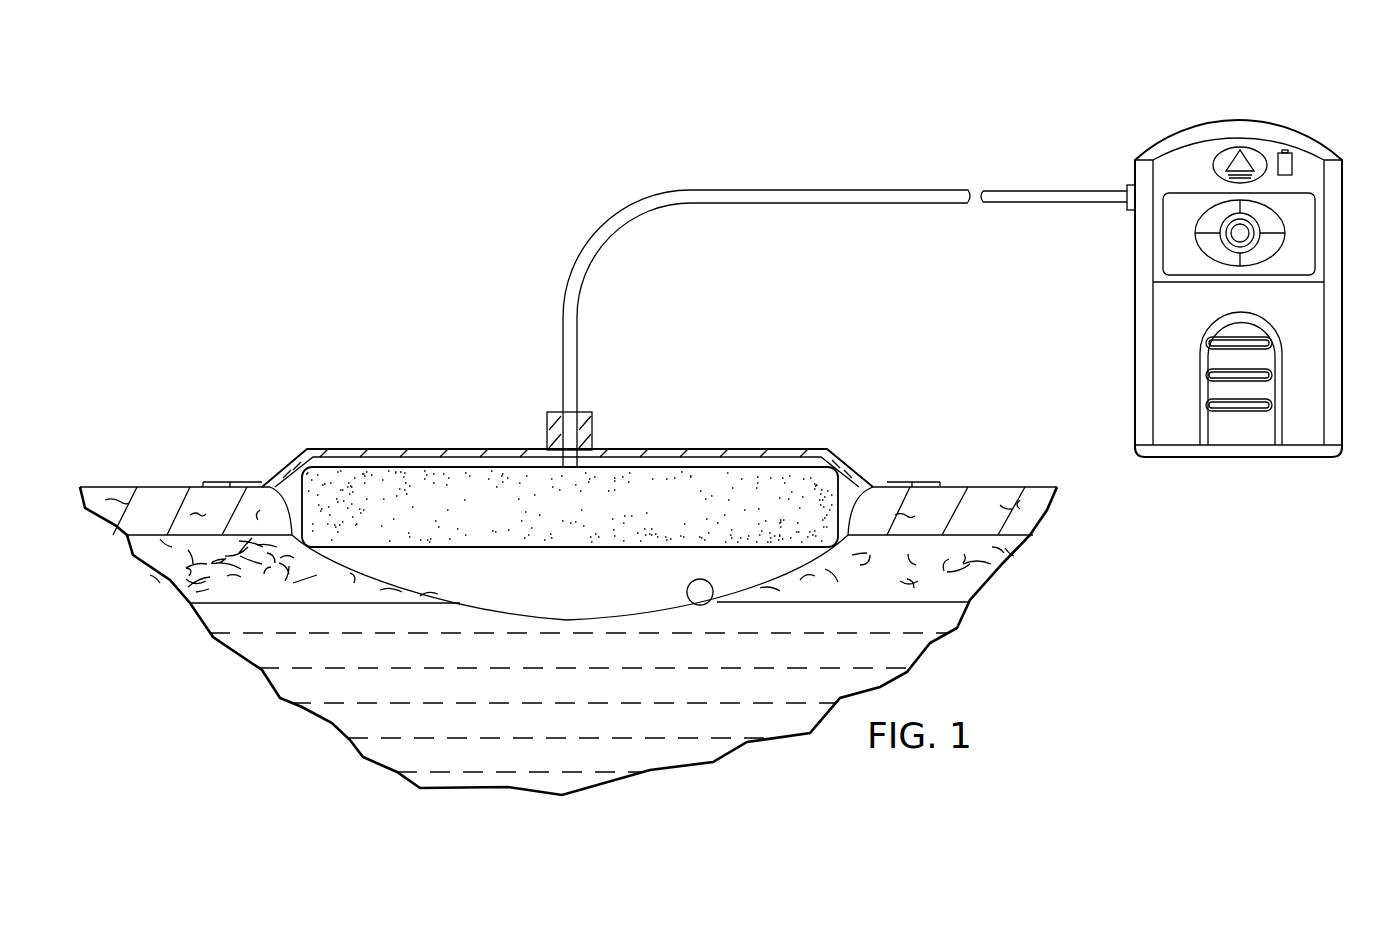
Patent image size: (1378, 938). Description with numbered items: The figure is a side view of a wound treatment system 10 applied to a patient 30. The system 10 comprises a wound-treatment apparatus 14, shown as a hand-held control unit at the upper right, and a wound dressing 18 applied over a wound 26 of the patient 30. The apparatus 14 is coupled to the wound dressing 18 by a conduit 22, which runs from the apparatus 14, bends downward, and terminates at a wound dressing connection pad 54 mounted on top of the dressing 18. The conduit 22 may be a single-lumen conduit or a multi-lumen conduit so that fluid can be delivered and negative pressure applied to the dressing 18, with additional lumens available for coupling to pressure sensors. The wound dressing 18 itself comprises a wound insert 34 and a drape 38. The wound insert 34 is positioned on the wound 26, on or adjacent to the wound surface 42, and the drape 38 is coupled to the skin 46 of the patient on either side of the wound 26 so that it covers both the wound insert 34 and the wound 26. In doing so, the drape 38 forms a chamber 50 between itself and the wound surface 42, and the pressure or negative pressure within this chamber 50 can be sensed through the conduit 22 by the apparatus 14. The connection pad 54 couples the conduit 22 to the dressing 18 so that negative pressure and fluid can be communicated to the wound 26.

The wound treatment system 10 is at (386, 193).
The wound-treatment apparatus 14 is at (1240, 120).
The wound dressing 18 is at (386, 398).
The conduit 22 is at (840, 190).
The wound 26 is at (459, 618).
The patient 30 is at (1046, 481).
The wound insert 34 is at (555, 520).
The drape 38 is at (805, 449).
The wound surface 42 is at (700, 605).
The skin 46 is at (155, 487).
The chamber 50 is at (848, 482).
The wound dressing connection pad 54 is at (595, 427).